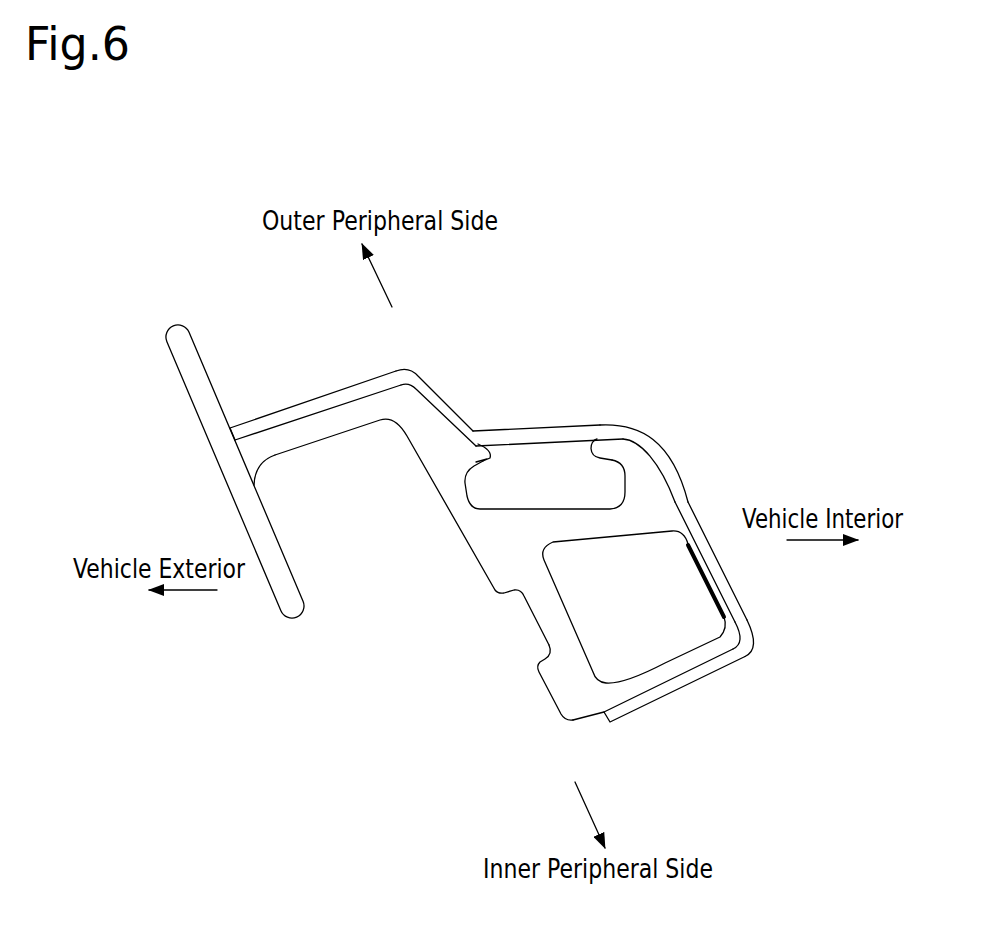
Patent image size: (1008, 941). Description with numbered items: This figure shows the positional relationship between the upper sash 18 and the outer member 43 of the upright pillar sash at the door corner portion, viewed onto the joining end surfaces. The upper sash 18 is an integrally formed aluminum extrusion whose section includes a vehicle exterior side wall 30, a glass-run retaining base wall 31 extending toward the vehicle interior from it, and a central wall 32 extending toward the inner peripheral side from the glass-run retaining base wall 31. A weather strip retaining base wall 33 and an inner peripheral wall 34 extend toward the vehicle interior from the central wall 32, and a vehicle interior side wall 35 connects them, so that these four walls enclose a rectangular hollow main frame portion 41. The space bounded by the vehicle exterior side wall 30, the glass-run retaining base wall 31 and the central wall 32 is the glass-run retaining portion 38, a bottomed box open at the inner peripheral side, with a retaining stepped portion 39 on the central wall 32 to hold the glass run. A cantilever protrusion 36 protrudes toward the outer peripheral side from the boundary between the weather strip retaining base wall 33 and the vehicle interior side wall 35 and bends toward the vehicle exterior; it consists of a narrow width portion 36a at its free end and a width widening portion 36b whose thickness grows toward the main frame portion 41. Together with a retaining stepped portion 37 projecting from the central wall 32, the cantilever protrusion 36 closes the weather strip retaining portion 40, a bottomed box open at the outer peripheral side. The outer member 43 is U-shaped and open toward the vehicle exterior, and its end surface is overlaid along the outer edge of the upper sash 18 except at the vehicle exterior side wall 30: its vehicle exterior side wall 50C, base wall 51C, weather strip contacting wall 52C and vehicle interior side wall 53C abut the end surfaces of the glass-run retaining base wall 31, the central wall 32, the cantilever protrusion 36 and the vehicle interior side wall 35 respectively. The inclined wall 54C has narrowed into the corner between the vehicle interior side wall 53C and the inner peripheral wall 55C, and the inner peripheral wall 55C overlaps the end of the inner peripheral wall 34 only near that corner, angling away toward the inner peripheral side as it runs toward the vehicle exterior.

The upper sash 18 is at (182, 385).
The vehicle exterior side wall 30 is at (250, 521).
The glass-run retaining base wall 31 is at (328, 422).
The central wall 32 is at (443, 473).
The weather strip retaining base wall 33 is at (575, 520).
The inner peripheral wall 34 is at (667, 677).
The vehicle interior side wall 35 is at (673, 522).
The cantilever protrusion 36 is at (713, 402).
The narrow width portion 36a is at (603, 447).
The width widening portion 36b is at (650, 485).
The retaining stepped portion 37 is at (492, 457).
The glass-run retaining portion 38 is at (378, 604).
The retaining stepped portion 39 is at (540, 667).
The weather strip retaining portion 40 is at (529, 457).
The main frame portion 41 is at (588, 731).
The outer member 43 is at (518, 412).
The vehicle exterior side wall 50C is at (273, 425).
The base wall 51C is at (447, 412).
The weather strip contacting wall 52C is at (573, 433).
The vehicle interior side wall 53C is at (712, 568).
The inclined wall 54C is at (732, 648).
The inner peripheral wall 55C is at (693, 672).